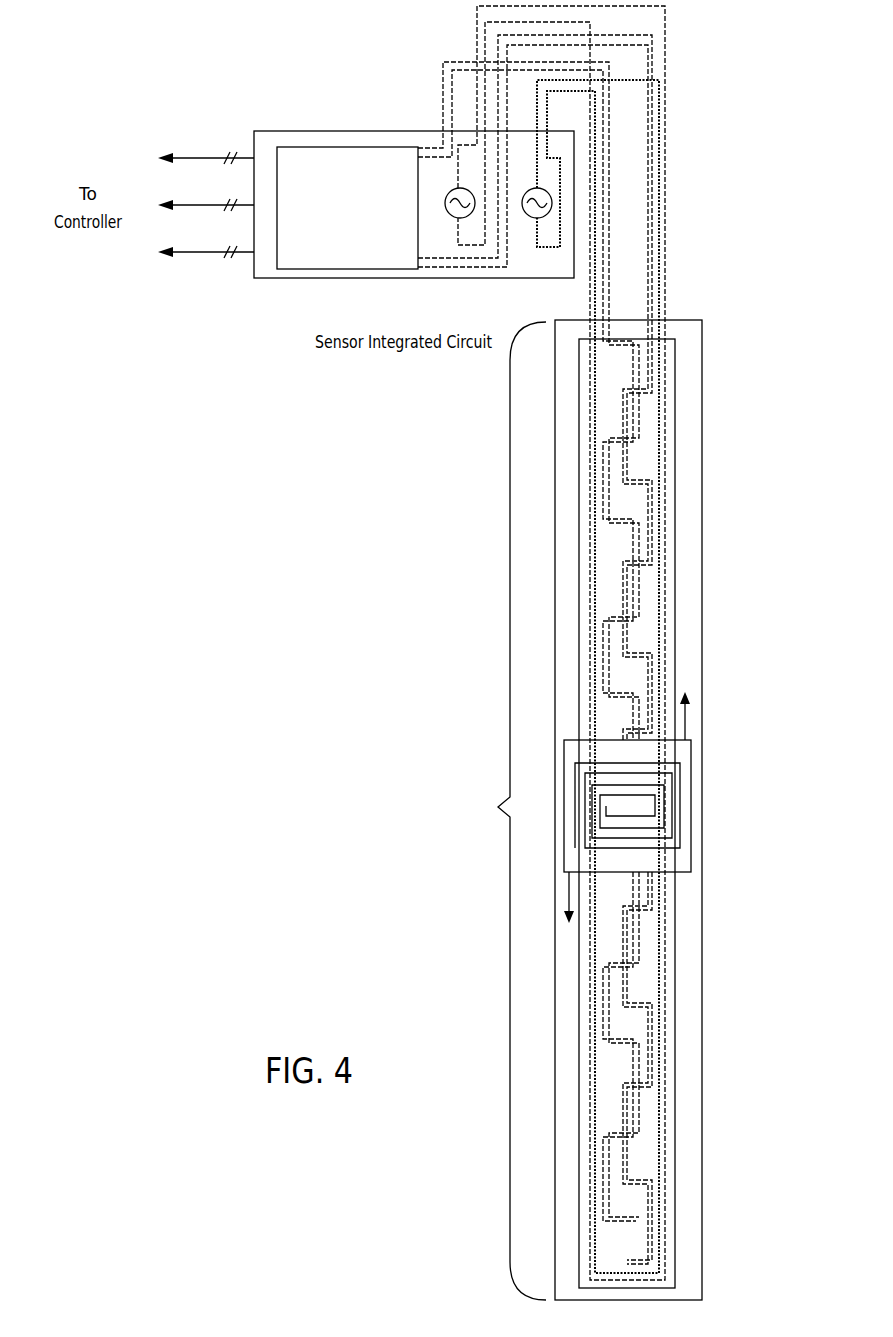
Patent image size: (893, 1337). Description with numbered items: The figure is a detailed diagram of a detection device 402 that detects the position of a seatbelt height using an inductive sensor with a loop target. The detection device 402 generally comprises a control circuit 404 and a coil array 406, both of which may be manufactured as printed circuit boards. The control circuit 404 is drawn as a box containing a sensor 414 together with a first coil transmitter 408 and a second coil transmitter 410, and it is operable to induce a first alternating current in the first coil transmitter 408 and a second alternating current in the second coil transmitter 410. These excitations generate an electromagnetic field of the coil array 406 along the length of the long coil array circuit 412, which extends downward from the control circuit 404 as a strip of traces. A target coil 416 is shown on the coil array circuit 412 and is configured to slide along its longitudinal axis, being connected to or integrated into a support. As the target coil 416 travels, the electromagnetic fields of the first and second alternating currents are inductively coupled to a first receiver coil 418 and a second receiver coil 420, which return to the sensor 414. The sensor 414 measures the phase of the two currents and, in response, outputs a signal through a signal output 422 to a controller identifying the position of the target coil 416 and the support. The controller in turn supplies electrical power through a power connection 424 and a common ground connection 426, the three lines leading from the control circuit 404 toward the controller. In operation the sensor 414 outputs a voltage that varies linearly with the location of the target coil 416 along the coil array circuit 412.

The detection device 402 is at (738, 219).
The control circuit 404 is at (283, 104).
The coil array 406 is at (479, 811).
The first coil transmitter 408 is at (456, 218).
The second coil transmitter 410 is at (535, 218).
The coil array circuit 412 is at (479, 811).
The sensor 414 is at (325, 225).
The target coil 416 is at (685, 797).
The first receiver coil 418 is at (437, 150).
The second receiver coil 420 is at (440, 270).
The signal output 422 is at (192, 256).
The power connection 424 is at (203, 157).
The common ground connection 426 is at (185, 204).